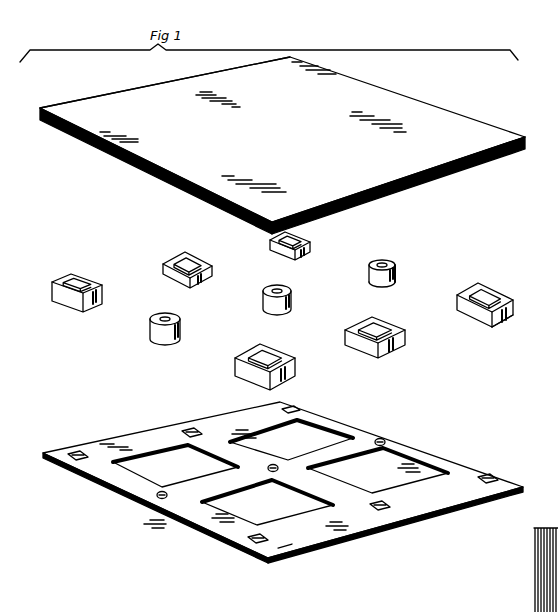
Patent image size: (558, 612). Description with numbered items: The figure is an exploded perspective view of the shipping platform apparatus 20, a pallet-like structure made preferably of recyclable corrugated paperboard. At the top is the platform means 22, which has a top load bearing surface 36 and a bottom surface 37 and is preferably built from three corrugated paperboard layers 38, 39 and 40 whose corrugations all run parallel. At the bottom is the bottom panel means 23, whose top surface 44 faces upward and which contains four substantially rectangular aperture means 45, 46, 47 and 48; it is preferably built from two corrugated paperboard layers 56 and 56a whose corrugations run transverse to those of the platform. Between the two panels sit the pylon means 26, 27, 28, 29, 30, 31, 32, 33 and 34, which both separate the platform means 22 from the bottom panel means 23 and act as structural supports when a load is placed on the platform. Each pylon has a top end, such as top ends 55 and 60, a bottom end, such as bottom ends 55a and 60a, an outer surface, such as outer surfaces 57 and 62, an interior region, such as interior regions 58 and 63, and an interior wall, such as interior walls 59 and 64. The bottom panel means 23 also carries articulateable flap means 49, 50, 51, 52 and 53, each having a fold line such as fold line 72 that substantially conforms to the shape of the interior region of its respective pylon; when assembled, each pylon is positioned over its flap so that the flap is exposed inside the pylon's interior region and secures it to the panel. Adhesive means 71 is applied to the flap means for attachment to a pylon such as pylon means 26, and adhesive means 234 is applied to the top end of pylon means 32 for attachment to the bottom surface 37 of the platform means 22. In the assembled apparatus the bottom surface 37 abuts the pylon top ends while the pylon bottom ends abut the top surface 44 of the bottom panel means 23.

The shipping platform apparatus 20 is at (282, 145).
The platform means 22 is at (169, 75).
The bottom panel means 23 is at (287, 488).
The pylon means 26 is at (498, 305).
The pylon means 27 is at (368, 346).
The pylon means 28 is at (240, 372).
The pylon means 29 is at (384, 269).
The pylon means 30 is at (268, 305).
The pylon means 31 is at (152, 335).
The pylon means 32 is at (65, 282).
The pylon means 33 is at (178, 281).
The pylon means 34 is at (285, 252).
The top load bearing surface 36 is at (120, 100).
The bottom surface 37 is at (160, 172).
The paperboard corrugated layer 38 is at (373, 190).
The paperboard corrugated layer 39 is at (410, 180).
The paperboard corrugated layer 40 is at (438, 175).
The top surface 44 is at (142, 440).
The aperture means 45 is at (320, 440).
The aperture means 46 is at (395, 486).
The aperture means 47 is at (230, 511).
The aperture means 48 is at (145, 470).
The articulateable flap means 49 is at (72, 451).
The articulateable flap means 50 is at (188, 429).
The articulateable flap means 51 is at (508, 490).
The articulateable flap means 52 is at (390, 437).
The articulateable flap means 53 is at (150, 505).
The top end 55 is at (490, 295).
The bottom end 55a is at (506, 320).
The corrugated paperboard layer 56 is at (240, 541).
The corrugated paperboard layer 56a is at (252, 543).
The outer surface 57 is at (512, 312).
The interior region 58 is at (478, 292).
The interior wall 59 is at (497, 297).
The top end 60 is at (380, 263).
The bottom end 60a is at (394, 289).
The outer surface 62 is at (397, 280).
The interior region 63 is at (396, 265).
The interior wall 64 is at (386, 262).
The adhesive means 71 is at (490, 476).
The fold line 72 is at (290, 546).
The adhesive means 234 is at (78, 273).